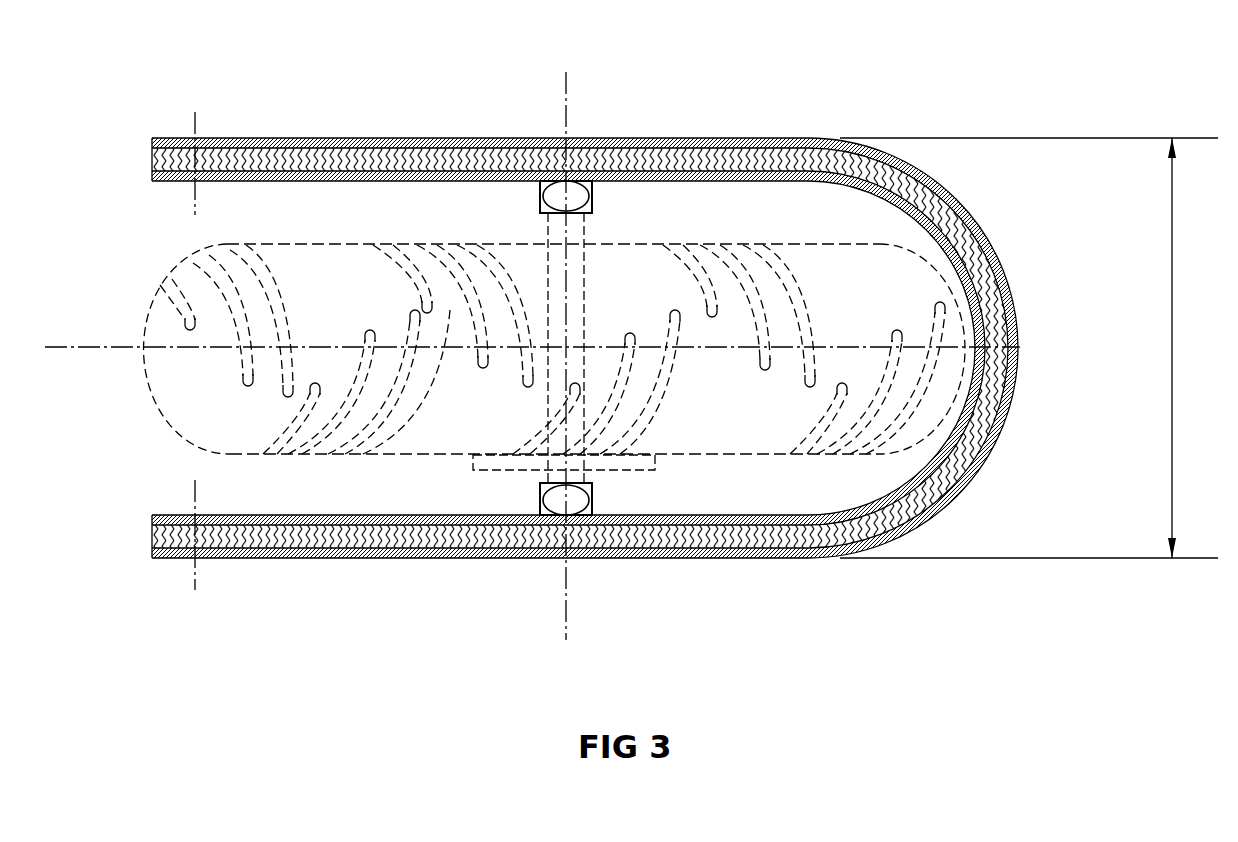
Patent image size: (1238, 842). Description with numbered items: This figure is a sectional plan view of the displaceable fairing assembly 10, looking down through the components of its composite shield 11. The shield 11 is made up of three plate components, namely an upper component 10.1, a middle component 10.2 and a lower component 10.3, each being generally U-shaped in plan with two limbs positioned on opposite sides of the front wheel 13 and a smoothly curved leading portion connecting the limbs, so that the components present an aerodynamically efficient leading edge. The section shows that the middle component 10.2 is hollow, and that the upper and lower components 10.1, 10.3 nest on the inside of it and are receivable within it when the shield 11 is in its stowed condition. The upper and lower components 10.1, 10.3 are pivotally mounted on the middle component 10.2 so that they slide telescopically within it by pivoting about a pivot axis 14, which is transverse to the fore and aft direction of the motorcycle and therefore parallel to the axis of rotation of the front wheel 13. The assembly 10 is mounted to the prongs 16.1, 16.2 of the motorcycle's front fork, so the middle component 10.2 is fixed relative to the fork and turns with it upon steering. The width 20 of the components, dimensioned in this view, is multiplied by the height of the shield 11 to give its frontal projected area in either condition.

The displaceable fairing assembly 10 is at (1048, 260).
The upper component 10.1 is at (315, 523).
The middle component 10.2 is at (450, 550).
The lower component 10.3 is at (628, 535).
The composite shield 11 is at (958, 108).
The front wheel 13 is at (646, 280).
The pivot axis 14 is at (197, 131).
The prong of front fork 16.1 is at (596, 486).
The prong of front fork 16.2 is at (540, 206).
The width of the components 20 is at (1029, 348).